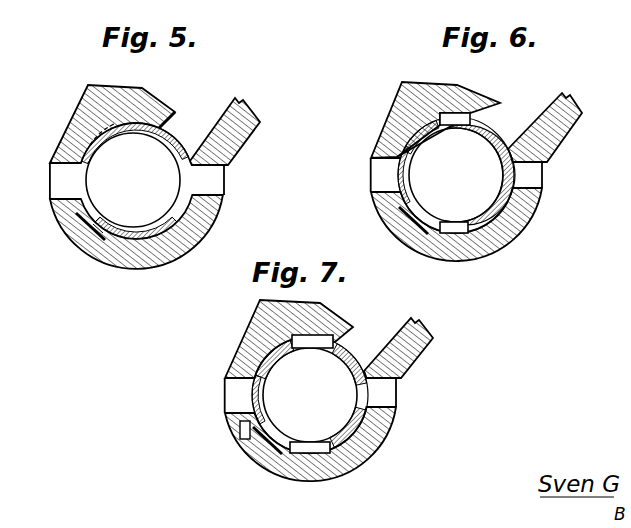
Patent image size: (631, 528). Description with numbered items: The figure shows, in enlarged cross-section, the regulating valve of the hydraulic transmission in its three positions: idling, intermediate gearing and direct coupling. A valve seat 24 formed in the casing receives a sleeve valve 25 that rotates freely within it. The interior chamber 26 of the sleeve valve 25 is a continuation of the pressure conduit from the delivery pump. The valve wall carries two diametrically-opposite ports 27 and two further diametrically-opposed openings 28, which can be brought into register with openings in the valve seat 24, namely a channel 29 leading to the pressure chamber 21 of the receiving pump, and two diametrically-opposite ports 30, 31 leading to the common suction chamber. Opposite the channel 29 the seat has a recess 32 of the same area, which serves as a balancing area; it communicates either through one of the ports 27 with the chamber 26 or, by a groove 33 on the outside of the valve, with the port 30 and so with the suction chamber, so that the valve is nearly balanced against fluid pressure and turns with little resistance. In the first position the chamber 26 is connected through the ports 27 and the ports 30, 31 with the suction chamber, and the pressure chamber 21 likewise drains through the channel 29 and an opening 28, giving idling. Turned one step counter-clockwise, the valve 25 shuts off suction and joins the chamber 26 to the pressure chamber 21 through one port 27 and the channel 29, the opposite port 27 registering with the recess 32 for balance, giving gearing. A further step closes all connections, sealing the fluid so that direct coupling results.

In FIG. 5, the pressure chamber 21 is at (133, 180).
In FIG. 6, the pressure chamber 21 is at (472, 157).
In FIG. 7, the pressure chamber 21 is at (329, 374).
In FIG. 5, the valve seat 24 is at (136, 188).
In FIG. 6, the valve seat 24 is at (464, 177).
In FIG. 7, the valve seat 24 is at (310, 402).
In FIG. 5, the sleeve valve 25 is at (135, 121).
In FIG. 6, the sleeve valve 25 is at (415, 118).
In FIG. 7, the sleeve valve 25 is at (278, 395).
In FIG. 5, the interior chamber 26 is at (152, 241).
In FIG. 6, the interior chamber 26 is at (478, 177).
In FIG. 7, the interior chamber 26 is at (379, 427).
In FIG. 5, the ports 27 is at (140, 176).
In FIG. 6, the ports 27 is at (483, 201).
In FIG. 7, the ports 27 is at (313, 400).
In FIG. 5, the openings 28 is at (140, 186).
In FIG. 6, the openings 28 is at (472, 180).
In FIG. 7, the openings 28 is at (307, 393).
In FIG. 5, the channel 29 is at (233, 131).
In FIG. 6, the channel 29 is at (565, 127).
In FIG. 7, the channel 29 is at (401, 348).
In FIG. 5, the port 30 is at (42, 183).
In FIG. 6, the port 30 is at (355, 171).
In FIG. 7, the port 30 is at (210, 395).
In FIG. 5, the port 31 is at (232, 187).
In FIG. 6, the port 31 is at (553, 178).
In FIG. 7, the port 31 is at (404, 392).
In FIG. 5, the recess 32 is at (77, 236).
In FIG. 6, the recess 32 is at (394, 226).
In FIG. 7, the recess 32 is at (251, 454).
In FIG. 5, the groove 33 is at (82, 116).
In FIG. 6, the groove 33 is at (375, 175).
In FIG. 7, the groove 33 is at (231, 408).